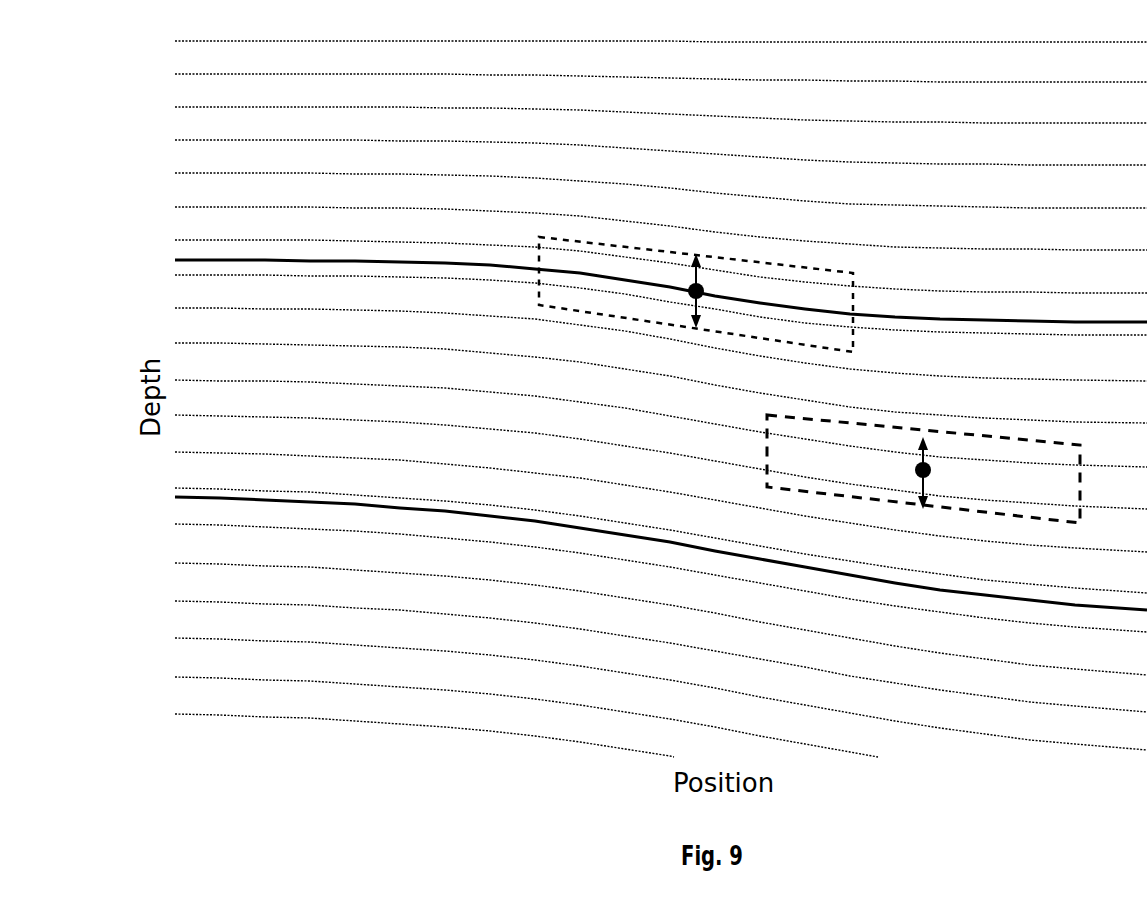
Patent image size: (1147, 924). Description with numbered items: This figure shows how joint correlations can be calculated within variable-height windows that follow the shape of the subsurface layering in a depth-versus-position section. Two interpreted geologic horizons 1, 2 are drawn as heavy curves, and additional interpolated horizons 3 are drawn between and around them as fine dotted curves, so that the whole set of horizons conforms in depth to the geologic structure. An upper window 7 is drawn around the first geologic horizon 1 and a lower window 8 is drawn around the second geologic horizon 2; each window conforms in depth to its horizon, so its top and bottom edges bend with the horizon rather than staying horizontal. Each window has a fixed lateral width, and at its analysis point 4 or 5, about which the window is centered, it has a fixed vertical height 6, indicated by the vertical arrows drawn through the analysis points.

The geologic horizon 1 is at (235, 260).
The geologic horizon 2 is at (267, 500).
The interpolated horizon 3 is at (407, 572).
The window analysis point 4 is at (698, 280).
The window analysis point 5 is at (926, 462).
The fixed vertical height 6 is at (927, 487).
The variable-height window 7 is at (812, 270).
The variable-height window 8 is at (1052, 442).